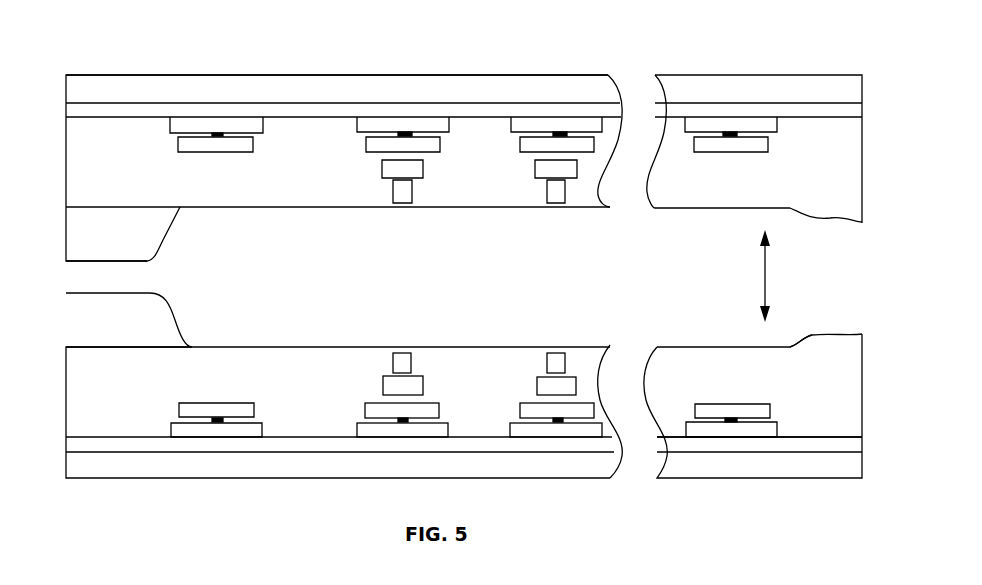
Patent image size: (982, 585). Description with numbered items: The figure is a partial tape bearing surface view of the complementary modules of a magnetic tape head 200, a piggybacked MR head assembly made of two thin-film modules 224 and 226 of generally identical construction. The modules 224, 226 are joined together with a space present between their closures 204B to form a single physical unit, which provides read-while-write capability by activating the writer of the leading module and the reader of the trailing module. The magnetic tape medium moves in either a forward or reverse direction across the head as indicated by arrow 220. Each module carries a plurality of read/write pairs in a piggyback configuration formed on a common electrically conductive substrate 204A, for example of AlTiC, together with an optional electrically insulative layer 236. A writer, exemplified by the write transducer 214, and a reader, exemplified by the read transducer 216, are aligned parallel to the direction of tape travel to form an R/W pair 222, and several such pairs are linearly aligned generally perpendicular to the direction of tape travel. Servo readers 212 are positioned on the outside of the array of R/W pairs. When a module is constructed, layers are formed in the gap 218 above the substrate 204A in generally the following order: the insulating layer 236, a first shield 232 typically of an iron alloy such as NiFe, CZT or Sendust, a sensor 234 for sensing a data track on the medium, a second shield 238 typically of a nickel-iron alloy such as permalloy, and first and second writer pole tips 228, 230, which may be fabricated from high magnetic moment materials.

The magnetic tape head 200 is at (394, 58).
The substrate 204A is at (344, 168).
The closure 204B is at (163, 240).
The servo reader 212 is at (260, 392).
The write transducer 214 is at (396, 351).
The read transducer 216 is at (386, 404).
The gap 218 is at (263, 208).
The arrow 220 is at (770, 280).
The R/W pair 222 is at (416, 326).
The thin-film module 224 is at (785, 75).
The thin-film module 226 is at (772, 478).
The first writer pole tip 228 is at (383, 388).
The second writer pole tip 230 is at (393, 360).
The first shield 232 is at (357, 430).
The sensor 234 is at (356, 414).
The electrically insulative layer 236 is at (802, 442).
The second shield 238 is at (365, 407).